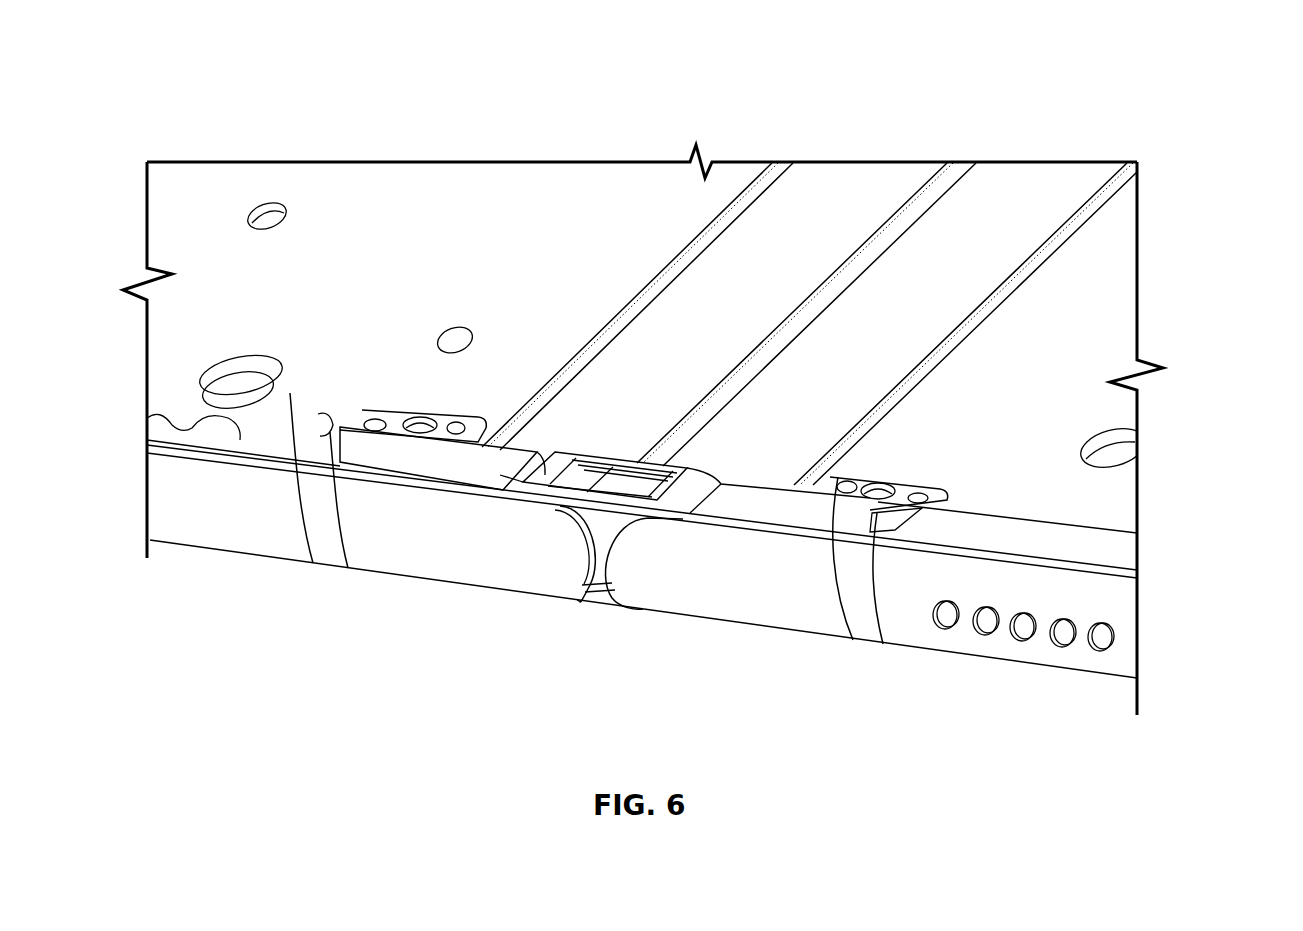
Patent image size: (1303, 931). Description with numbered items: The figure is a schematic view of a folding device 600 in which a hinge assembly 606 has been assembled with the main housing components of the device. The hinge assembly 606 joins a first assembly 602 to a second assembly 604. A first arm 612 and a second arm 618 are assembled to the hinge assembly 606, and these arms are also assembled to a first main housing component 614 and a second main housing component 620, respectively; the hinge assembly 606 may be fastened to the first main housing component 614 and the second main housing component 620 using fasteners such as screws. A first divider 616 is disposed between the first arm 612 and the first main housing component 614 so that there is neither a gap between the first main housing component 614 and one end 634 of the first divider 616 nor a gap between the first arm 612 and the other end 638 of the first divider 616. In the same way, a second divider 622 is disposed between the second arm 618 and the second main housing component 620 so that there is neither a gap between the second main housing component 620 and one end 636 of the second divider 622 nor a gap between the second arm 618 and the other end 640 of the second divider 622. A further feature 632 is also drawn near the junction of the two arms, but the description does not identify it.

The folding device 600 is at (1173, 102).
The first assembly 602 is at (342, 124).
The second assembly 604 is at (1172, 291).
The hinge assembly 606 is at (706, 437).
The first arm 612 is at (440, 583).
The first main housing component 614 is at (189, 545).
The first divider 616 is at (322, 565).
The second arm 618 is at (733, 622).
The second main housing component 620 is at (991, 658).
The second divider 622 is at (860, 640).
The hinge 632 is at (593, 576).
The end of first divider 634 is at (276, 388).
The end of second divider 636 is at (930, 508).
The end of first divider 638 is at (333, 440).
The end of second divider 640 is at (843, 477).